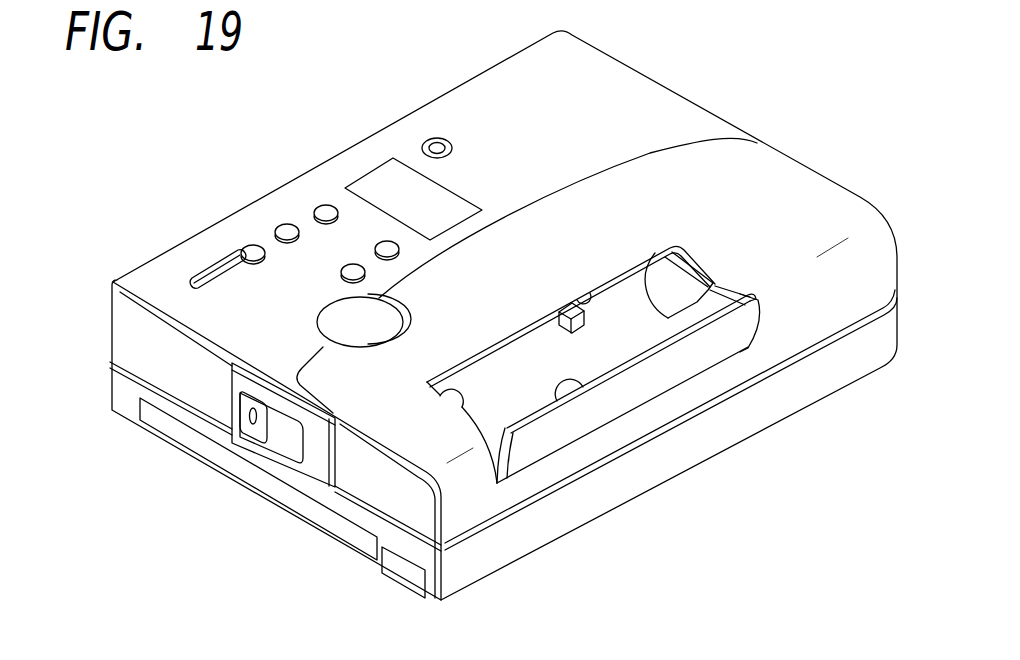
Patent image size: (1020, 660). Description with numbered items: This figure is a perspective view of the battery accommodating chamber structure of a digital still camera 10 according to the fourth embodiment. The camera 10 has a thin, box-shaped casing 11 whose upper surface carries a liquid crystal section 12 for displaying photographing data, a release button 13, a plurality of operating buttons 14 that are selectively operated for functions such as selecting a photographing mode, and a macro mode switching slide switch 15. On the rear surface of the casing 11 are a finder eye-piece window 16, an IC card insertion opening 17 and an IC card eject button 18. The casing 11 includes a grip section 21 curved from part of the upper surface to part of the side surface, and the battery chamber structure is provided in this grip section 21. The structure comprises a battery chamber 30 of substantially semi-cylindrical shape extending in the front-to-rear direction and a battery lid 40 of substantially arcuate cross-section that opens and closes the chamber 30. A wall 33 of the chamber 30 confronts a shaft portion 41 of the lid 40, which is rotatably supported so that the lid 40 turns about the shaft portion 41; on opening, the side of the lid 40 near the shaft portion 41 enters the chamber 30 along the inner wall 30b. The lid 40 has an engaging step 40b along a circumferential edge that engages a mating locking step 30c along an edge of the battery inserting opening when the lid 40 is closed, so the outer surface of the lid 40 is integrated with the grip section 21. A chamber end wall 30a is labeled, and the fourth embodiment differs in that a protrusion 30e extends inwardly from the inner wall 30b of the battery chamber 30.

The digital still camera 10 is at (812, 41).
The casing 11 is at (643, 92).
The liquid crystal section 12 is at (373, 180).
The release button 13 is at (378, 321).
The operating buttons 14 is at (387, 240).
The macro mode switching slide switch 15 is at (252, 245).
The finder eye-piece window 16 is at (283, 444).
The IC card insertion opening 17 is at (183, 438).
The IC card eject button 18 is at (405, 575).
The grip section 21 is at (778, 302).
The battery chamber 30 is at (623, 313).
The chamber end wall 30a is at (426, 398).
The inner wall 30b is at (595, 343).
The locking step 30c is at (588, 300).
The protrusion 30e is at (560, 308).
The wall 33 is at (749, 297).
The battery lid 40 is at (683, 357).
The engaging step 40b is at (580, 408).
The shaft portion 41 is at (731, 297).